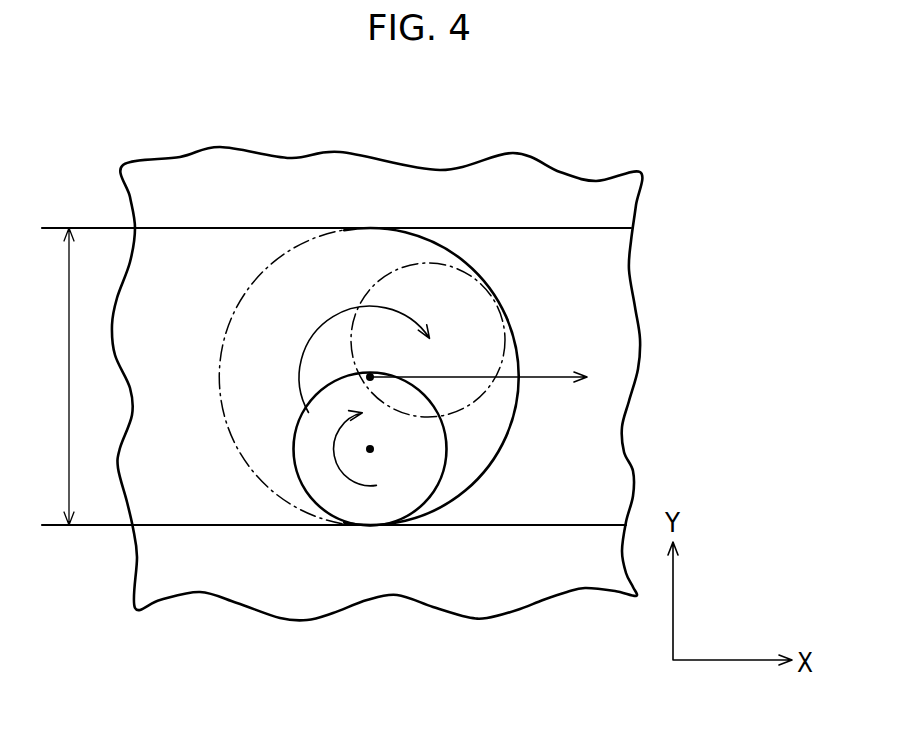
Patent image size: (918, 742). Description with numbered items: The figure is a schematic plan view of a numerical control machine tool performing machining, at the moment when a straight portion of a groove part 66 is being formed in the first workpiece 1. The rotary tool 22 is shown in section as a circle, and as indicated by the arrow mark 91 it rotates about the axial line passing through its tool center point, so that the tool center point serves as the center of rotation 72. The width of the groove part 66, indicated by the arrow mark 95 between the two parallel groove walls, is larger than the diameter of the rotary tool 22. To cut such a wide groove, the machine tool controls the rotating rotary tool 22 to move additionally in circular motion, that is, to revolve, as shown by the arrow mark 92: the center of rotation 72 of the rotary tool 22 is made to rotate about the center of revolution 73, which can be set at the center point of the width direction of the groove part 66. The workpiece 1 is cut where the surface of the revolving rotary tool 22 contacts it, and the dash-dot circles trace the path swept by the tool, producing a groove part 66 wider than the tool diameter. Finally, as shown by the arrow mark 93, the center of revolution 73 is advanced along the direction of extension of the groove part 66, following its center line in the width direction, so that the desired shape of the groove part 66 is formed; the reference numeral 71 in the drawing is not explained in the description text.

The first workpiece 1 is at (220, 173).
The rotary tool 22 is at (447, 462).
The groove part 66 is at (187, 527).
The outer rotor rotation center 71 is at (445, 262).
The center of rotation 72 is at (372, 452).
The center of revolution 73 is at (370, 377).
The arrow mark 91 is at (347, 475).
The arrow mark 92 is at (403, 312).
The arrow mark 93 is at (535, 375).
The arrow mark 95 is at (52, 376).